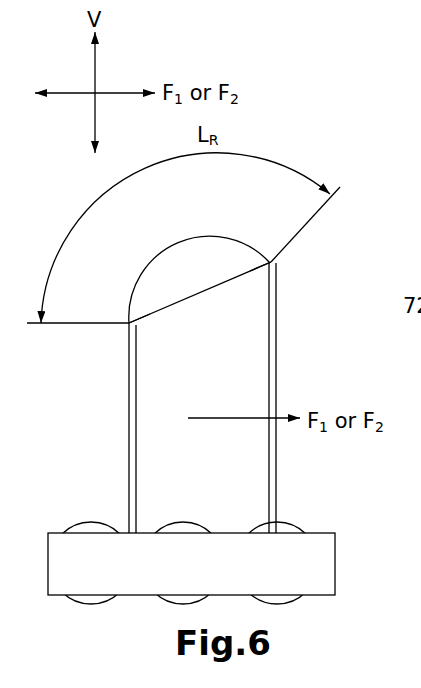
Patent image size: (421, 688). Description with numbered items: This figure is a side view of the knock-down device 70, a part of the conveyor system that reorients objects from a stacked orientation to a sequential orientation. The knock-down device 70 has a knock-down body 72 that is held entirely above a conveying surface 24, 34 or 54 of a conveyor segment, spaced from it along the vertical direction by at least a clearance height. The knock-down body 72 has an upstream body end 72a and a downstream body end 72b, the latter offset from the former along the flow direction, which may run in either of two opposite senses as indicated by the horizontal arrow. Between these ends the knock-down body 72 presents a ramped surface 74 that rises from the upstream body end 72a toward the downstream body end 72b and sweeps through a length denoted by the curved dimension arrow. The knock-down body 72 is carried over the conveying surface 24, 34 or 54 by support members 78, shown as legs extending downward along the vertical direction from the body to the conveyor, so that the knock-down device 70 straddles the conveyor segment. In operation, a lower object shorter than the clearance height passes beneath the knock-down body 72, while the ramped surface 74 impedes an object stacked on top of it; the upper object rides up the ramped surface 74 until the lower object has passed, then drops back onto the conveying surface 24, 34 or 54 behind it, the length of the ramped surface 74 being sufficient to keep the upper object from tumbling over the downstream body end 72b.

The knock-down device 70 is at (318, 256).
The knock-down body 72 is at (222, 238).
The upstream body end 72a is at (126, 330).
The downstream body end 72b is at (286, 267).
The ramped surface 74 is at (170, 247).
The support member 78 is at (128, 449).
The conveying surface 24 is at (193, 523).
The conveying surface 34 is at (191, 563).
The conveying surface 54 is at (191, 563).